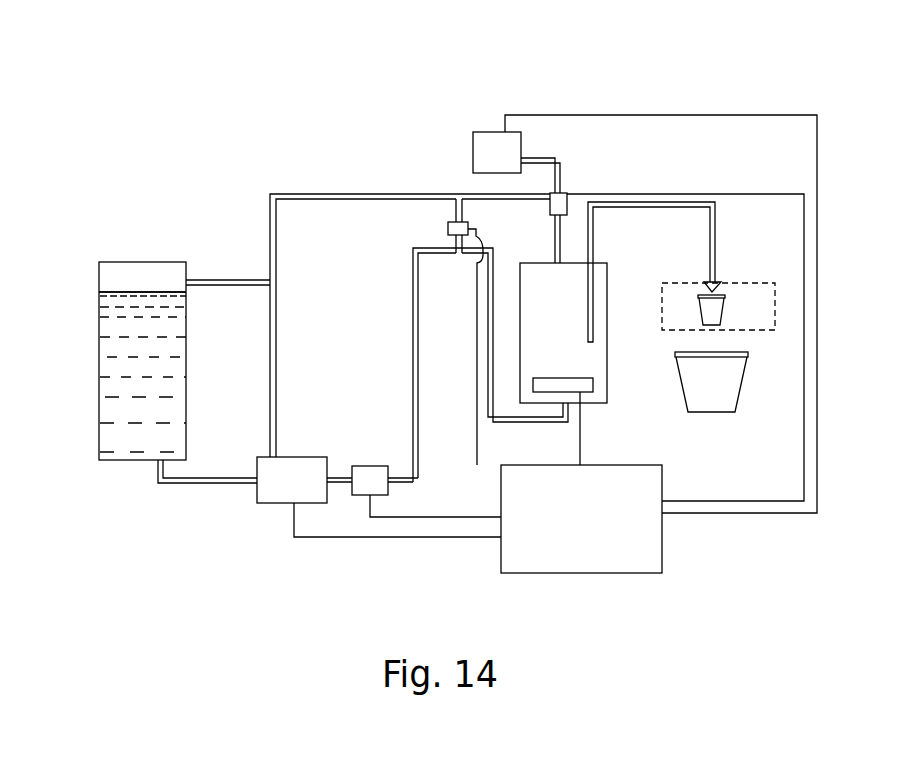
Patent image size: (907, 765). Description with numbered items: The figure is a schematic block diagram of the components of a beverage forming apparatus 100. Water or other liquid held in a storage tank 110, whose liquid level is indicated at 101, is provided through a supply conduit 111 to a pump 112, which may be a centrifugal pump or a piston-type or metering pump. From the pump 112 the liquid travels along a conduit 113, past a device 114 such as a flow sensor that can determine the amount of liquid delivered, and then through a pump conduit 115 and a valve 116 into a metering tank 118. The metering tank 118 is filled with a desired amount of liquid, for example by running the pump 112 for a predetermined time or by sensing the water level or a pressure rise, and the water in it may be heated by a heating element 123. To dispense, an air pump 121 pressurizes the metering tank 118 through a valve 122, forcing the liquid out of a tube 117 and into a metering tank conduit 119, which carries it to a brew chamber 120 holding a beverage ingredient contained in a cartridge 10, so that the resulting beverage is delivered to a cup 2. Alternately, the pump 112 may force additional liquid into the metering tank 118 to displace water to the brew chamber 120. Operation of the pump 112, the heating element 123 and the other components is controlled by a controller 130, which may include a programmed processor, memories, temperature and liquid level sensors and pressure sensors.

The beverage forming apparatus 100 is at (340, 86).
The water level 101 is at (104, 292).
The storage tank 110 is at (108, 388).
The supply conduit 111 is at (210, 484).
The pump 112 is at (285, 492).
The pipe 113 is at (277, 406).
The flow meter 114 is at (366, 466).
The pump conduit 115 is at (412, 334).
The valve 116 is at (450, 229).
The tube 117 is at (608, 285).
The metering tank 118 is at (608, 350).
The metering tank conduit 119 is at (651, 208).
The brew chamber 120 is at (730, 283).
The cartridge 10 is at (720, 318).
The cup 2 is at (736, 376).
The air pump 121 is at (474, 157).
The valve 122 is at (562, 192).
The heating element 123 is at (590, 393).
The controller 130 is at (660, 548).